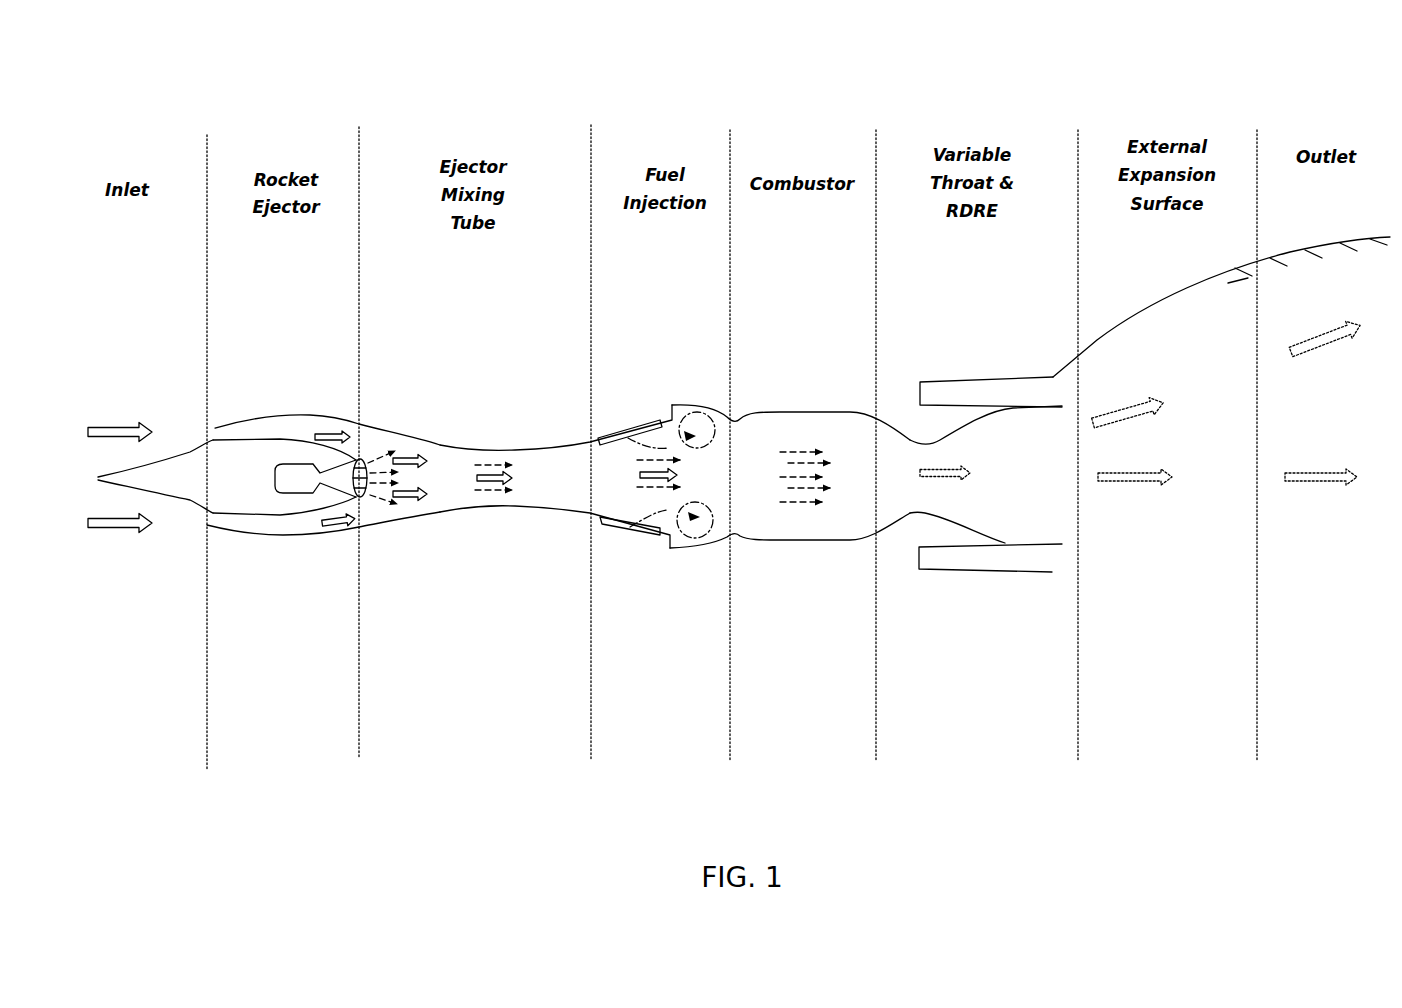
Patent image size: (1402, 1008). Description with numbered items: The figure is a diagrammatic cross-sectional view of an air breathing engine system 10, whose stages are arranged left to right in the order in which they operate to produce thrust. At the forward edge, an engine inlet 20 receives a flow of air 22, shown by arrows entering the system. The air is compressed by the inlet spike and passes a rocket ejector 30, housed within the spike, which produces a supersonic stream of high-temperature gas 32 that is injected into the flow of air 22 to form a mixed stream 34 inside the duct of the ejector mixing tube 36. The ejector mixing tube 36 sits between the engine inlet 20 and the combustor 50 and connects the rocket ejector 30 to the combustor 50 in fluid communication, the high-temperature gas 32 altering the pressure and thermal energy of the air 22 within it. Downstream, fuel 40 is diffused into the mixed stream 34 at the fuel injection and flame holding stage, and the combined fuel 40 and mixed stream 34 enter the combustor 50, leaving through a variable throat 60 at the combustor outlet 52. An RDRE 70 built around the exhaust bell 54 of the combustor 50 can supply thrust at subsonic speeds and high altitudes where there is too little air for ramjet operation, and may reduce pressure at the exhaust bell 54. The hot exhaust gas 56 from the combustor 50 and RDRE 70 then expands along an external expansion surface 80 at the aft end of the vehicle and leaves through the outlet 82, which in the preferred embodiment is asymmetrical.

The air breathing engine system 10 is at (166, 91).
The engine inlet 20 is at (202, 427).
The flow of air 22 is at (90, 440).
The rocket ejector 30 is at (283, 494).
The high-temperature gas 32 is at (377, 500).
The mixed stream 34 is at (490, 451).
The ejector mixing tube 36 is at (475, 507).
The fuel 40 is at (704, 404).
The combustor 50 is at (814, 543).
The combustor outlet 52 is at (966, 477).
The exhaust bell 54 is at (1005, 542).
The hot exhaust gas 56 is at (1127, 425).
The variable throat 60 is at (917, 516).
The RDRE 70 is at (967, 392).
The external expansion surface 80 is at (1221, 307).
The outlet 82 is at (1324, 385).